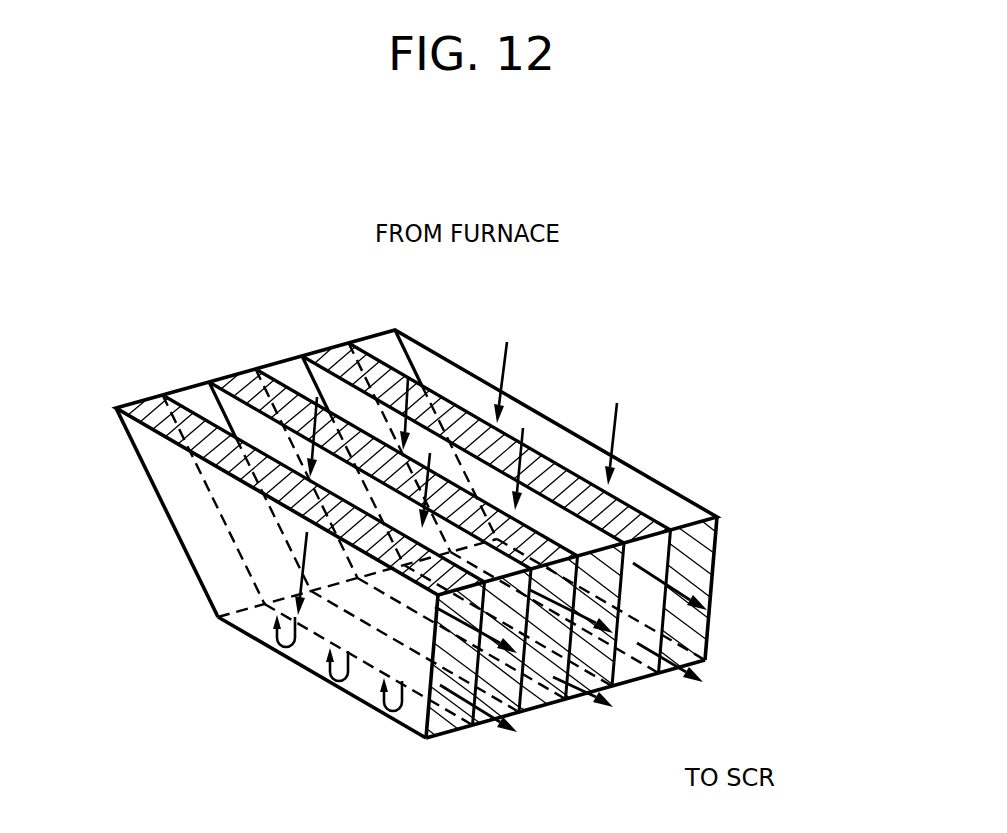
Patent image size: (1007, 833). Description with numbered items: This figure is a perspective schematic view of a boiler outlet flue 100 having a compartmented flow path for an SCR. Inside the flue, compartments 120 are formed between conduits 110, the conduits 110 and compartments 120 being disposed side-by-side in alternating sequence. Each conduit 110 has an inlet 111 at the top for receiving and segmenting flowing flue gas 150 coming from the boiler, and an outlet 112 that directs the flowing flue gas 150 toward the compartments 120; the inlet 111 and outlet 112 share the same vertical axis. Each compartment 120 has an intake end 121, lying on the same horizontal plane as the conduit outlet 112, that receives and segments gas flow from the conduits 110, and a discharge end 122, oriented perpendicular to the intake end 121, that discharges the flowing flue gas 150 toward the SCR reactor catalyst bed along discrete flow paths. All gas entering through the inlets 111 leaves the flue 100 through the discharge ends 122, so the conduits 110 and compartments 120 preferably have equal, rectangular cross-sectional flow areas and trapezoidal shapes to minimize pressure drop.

The boiler outlet flue 100 is at (782, 517).
The conduit 110 is at (548, 440).
The inlet 111 is at (657, 476).
The outlet 112 is at (385, 653).
The compartment 120 is at (186, 487).
The intake end 121 is at (248, 623).
The discharge end 122 is at (452, 713).
The flowing flue gas 150 is at (490, 522).